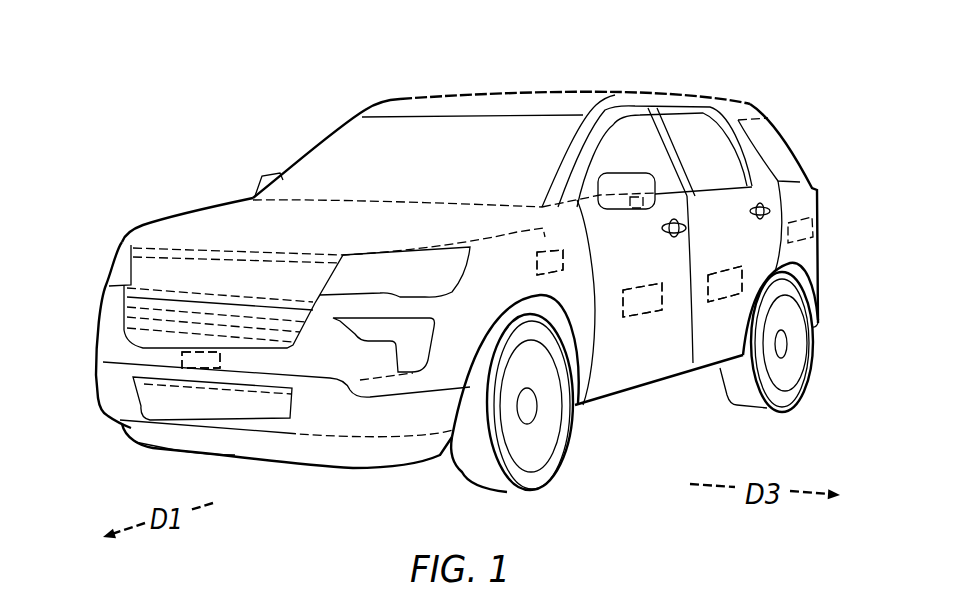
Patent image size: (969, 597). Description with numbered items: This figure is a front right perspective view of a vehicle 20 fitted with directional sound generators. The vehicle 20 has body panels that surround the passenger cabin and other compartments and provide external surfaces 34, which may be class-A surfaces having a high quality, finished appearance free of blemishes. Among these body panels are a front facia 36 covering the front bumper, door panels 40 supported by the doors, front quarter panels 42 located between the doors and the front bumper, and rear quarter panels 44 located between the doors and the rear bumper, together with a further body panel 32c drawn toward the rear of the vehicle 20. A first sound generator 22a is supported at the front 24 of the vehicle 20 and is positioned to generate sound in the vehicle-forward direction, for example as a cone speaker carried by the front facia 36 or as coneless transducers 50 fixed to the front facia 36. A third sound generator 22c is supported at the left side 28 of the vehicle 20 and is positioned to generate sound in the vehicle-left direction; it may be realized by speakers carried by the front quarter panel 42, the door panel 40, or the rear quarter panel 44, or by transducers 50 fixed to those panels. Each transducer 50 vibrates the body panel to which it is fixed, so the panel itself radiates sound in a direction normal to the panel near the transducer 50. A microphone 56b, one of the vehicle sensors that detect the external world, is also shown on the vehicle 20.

The vehicle 20 is at (323, 143).
The first sound generator 22a is at (163, 358).
The third sound generator 22c is at (562, 236).
The front 24 is at (107, 352).
The left side 28 is at (653, 388).
The rear body panel 32c is at (838, 227).
The external surfaces 34 is at (500, 297).
The front facia 36 is at (316, 362).
The door panels 40 is at (680, 202).
The front quarter panels 42 is at (505, 264).
The rear quarter panels 44 is at (787, 197).
The transducers 50 is at (197, 368).
The microphone 56b is at (639, 196).